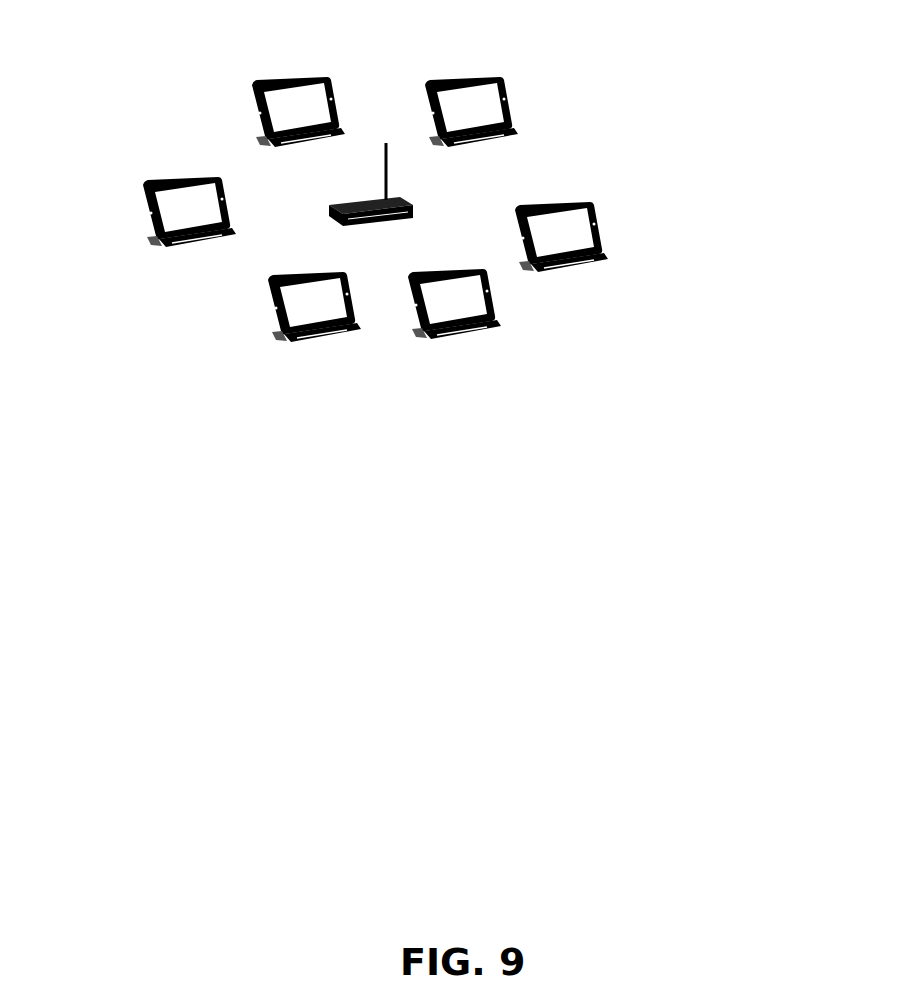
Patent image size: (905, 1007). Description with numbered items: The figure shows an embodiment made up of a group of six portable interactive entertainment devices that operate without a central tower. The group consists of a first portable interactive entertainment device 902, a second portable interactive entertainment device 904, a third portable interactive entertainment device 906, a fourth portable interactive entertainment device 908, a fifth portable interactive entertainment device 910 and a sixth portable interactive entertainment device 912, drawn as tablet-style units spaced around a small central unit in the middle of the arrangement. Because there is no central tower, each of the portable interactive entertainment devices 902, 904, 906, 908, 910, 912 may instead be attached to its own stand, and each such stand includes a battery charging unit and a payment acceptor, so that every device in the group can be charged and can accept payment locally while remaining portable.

The portable interactive entertainment device 902 is at (131, 206).
The portable interactive entertainment device 904 is at (248, 70).
The portable interactive entertainment device 906 is at (521, 98).
The portable interactive entertainment device 908 is at (609, 268).
The portable interactive entertainment device 910 is at (457, 355).
The portable interactive entertainment device 912 is at (257, 337).